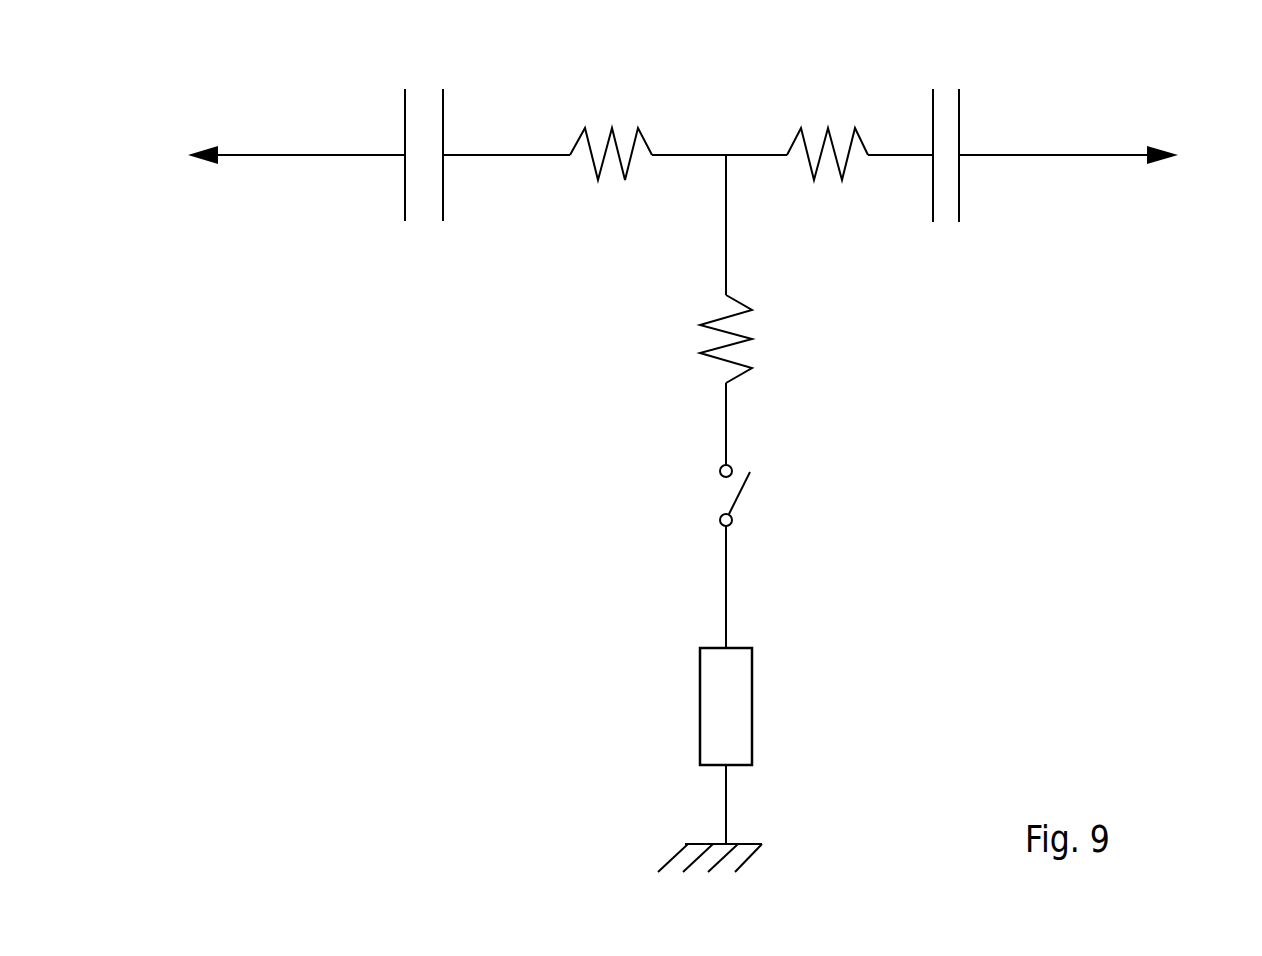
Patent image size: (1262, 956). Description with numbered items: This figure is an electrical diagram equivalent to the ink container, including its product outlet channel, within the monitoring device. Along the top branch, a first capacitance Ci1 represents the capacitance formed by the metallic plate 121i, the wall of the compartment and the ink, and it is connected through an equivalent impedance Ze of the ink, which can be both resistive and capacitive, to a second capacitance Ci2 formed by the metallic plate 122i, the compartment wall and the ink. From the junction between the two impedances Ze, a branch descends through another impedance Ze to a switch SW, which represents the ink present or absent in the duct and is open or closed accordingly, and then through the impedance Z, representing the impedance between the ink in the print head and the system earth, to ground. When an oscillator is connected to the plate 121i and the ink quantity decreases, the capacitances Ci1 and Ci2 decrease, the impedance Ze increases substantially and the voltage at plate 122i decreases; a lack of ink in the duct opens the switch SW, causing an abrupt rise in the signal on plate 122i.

The metallic plate 121i is at (174, 155).
The metallic plate 122i is at (1194, 155).
The capacitance Ci1 is at (424, 134).
The capacitance Ci2 is at (943, 134).
The equivalent impedance of the ink Ze is at (719, 234).
The switch SW is at (756, 495).
The impedance Z is at (741, 706).